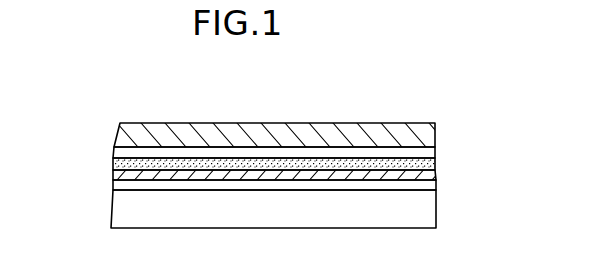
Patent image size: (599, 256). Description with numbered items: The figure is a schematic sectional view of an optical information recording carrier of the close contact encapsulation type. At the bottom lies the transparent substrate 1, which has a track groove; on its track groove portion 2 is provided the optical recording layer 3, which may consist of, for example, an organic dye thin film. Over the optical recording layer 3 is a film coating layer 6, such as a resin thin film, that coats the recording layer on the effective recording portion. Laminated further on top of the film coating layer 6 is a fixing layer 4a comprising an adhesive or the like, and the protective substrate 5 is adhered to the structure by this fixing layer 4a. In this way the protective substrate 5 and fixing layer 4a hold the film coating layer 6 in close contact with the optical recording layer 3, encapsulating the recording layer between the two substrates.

The transparent substrate 1 is at (427, 212).
The track groove portion 2 is at (428, 185).
The optical recording layer 3 is at (428, 178).
The fixing layer 4a is at (428, 152).
The protective substrate 5 is at (428, 140).
The film coating layer 6 is at (113, 167).